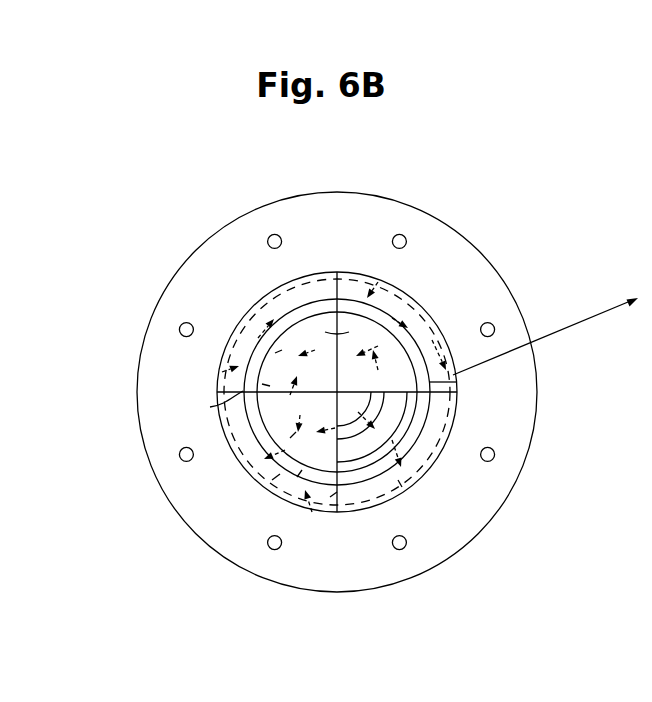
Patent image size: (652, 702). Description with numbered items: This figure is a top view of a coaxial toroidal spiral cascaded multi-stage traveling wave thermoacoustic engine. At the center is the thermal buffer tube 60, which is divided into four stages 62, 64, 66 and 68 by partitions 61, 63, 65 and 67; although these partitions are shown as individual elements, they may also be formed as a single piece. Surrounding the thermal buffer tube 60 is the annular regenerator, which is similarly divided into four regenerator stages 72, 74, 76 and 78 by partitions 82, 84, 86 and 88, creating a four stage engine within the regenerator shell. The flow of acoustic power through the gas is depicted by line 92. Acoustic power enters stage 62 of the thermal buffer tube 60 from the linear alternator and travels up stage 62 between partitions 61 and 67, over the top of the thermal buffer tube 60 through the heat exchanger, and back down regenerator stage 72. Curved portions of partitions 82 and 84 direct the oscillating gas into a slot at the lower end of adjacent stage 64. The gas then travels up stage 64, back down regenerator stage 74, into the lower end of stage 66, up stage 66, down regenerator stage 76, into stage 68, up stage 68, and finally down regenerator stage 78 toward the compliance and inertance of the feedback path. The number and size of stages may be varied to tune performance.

The thermal buffer tube 60 is at (453, 386).
The partition 61 is at (297, 477).
The stage 62 is at (390, 425).
The partition 63 is at (262, 384).
The stage 64 is at (290, 438).
The partition 65 is at (333, 332).
The stage 66 is at (275, 353).
The partition 67 is at (393, 397).
The stage 68 is at (403, 358).
The regenerator stage 72 is at (402, 487).
The regenerator stage 74 is at (272, 480).
The regenerator stage 76 is at (252, 317).
The regenerator stage 78 is at (393, 297).
The partition 82 is at (447, 395).
The partition 84 is at (330, 497).
The partition 86 is at (210, 407).
The partition 88 is at (334, 287).
The line 92 is at (567, 326).